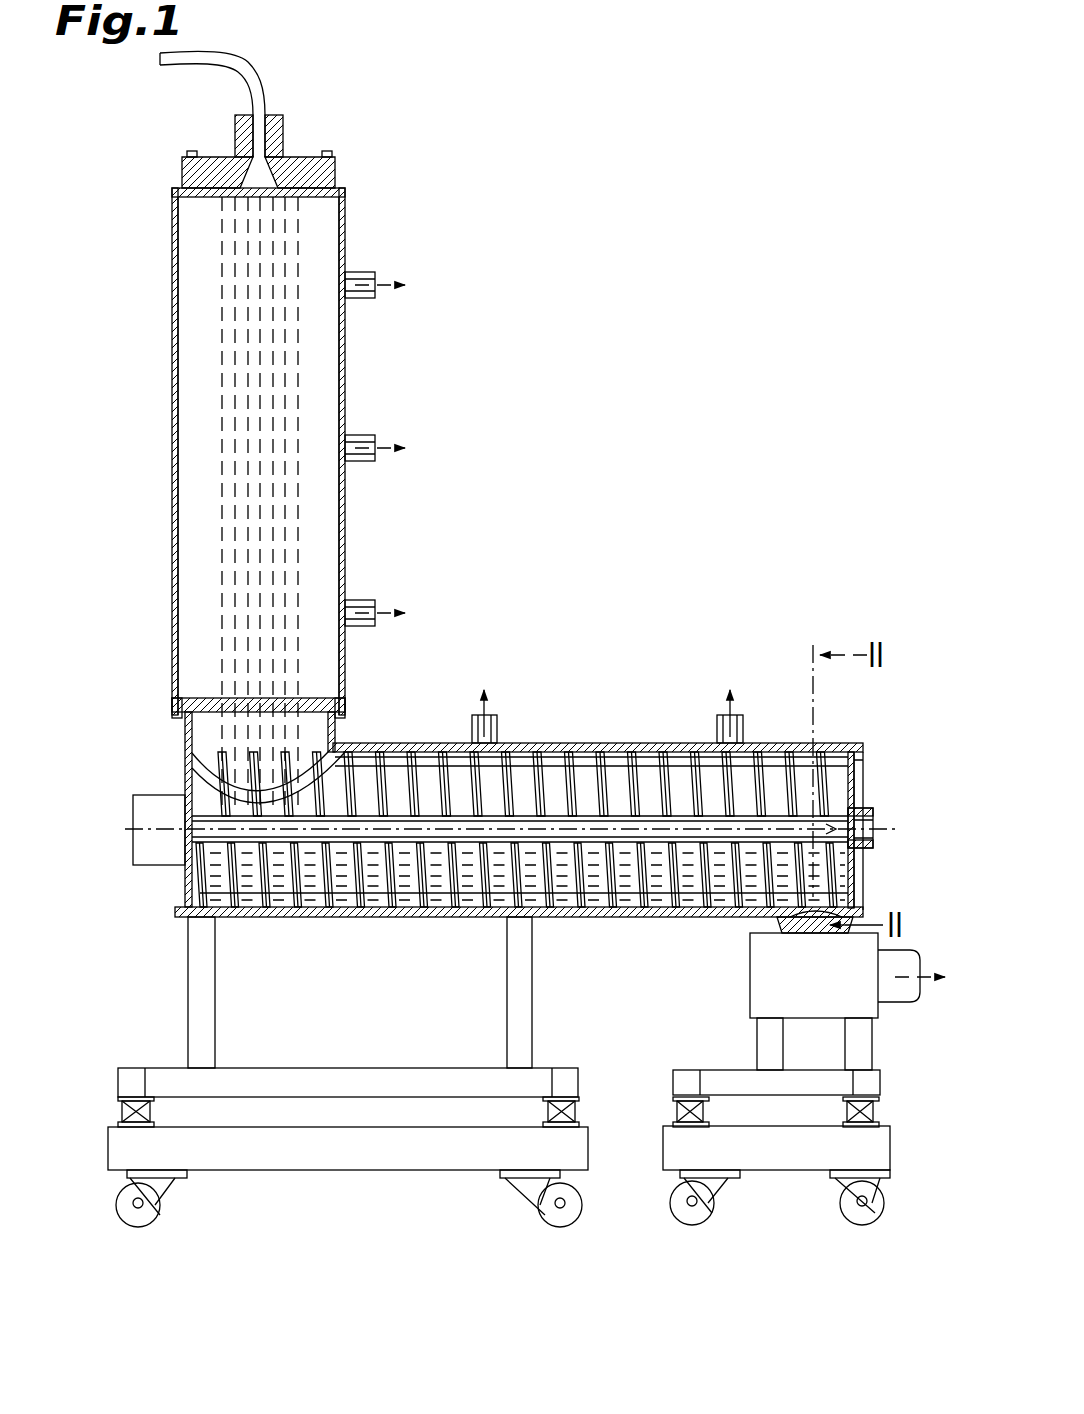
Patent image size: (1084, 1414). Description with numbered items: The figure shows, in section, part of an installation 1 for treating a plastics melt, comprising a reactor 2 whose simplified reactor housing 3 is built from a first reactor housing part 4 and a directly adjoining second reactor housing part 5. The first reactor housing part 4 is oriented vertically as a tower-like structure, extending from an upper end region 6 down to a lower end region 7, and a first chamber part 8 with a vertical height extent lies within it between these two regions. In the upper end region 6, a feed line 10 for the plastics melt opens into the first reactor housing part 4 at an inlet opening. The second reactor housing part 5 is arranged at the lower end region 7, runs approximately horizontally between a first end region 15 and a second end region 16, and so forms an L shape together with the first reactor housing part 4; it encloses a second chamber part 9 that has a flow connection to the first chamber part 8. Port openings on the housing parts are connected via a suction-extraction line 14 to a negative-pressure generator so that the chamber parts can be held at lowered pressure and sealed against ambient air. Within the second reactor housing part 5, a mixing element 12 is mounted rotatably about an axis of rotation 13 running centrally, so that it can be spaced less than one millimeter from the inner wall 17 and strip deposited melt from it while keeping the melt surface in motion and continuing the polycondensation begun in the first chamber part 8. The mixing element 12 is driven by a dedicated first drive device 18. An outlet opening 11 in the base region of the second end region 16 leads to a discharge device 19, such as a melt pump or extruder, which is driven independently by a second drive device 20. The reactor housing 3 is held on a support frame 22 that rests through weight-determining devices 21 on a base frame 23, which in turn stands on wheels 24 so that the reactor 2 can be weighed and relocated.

The installation 1 is at (724, 132).
The reactor 2 is at (765, 192).
The reactor housing 3 is at (598, 393).
The first reactor housing part 4 is at (362, 240).
The second reactor housing part 5 is at (598, 727).
The upper end region 6 is at (158, 200).
The lower end region 7 is at (160, 724).
The first chamber part 8 is at (200, 415).
The second chamber part 9 is at (545, 768).
The feed line 10 is at (168, 62).
The outlet opening 11 is at (815, 922).
The mixing element 12 is at (662, 768).
The axis of rotation 13 is at (878, 826).
The suction-extraction line 14 is at (370, 270).
The first end region 15 is at (168, 913).
The second end region 16 is at (870, 738).
The inner wall 17 is at (683, 900).
The first drive device 18 is at (143, 845).
The discharge device 19 is at (738, 1022).
The second drive device 20 is at (850, 1000).
The weight-determining device 21 is at (122, 1110).
The support frame 22 is at (196, 985).
The base frame 23 is at (355, 1150).
The wheels 24 is at (135, 1218).